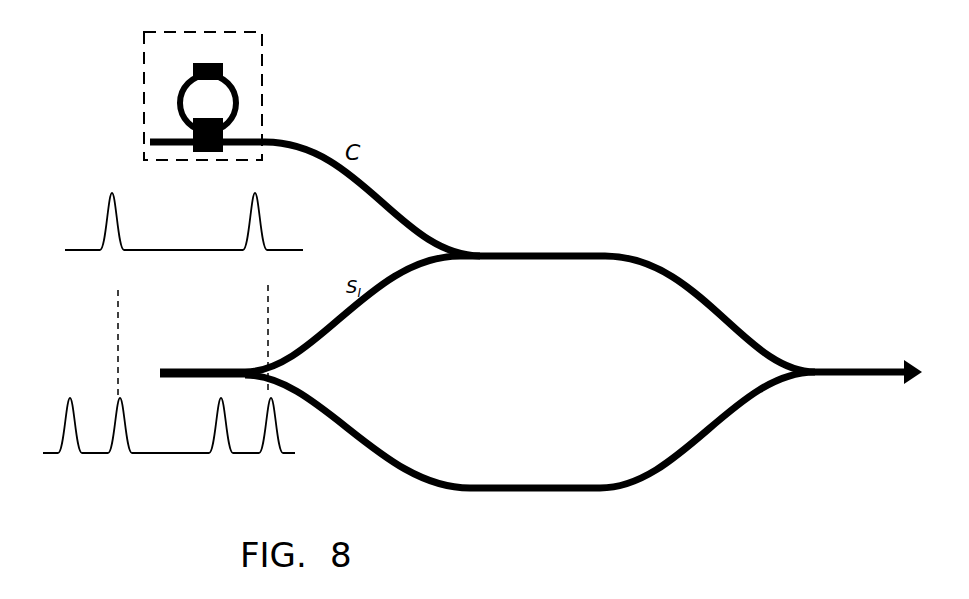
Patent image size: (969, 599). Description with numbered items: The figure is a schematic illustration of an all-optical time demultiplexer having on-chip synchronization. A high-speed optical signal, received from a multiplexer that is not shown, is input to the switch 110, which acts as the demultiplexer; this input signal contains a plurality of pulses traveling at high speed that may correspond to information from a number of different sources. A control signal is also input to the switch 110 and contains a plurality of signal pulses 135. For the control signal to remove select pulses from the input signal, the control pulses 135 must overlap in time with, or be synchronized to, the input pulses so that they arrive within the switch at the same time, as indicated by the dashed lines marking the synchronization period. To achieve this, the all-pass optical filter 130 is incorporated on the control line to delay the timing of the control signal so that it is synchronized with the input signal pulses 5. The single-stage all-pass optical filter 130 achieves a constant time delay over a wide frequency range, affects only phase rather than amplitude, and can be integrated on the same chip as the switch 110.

The switch 110 is at (542, 224).
The all-pass optical filter 130 is at (268, 37).
The signal pulses of the control signal 135 is at (78, 224).
The input signal pulse train 5 is at (50, 412).